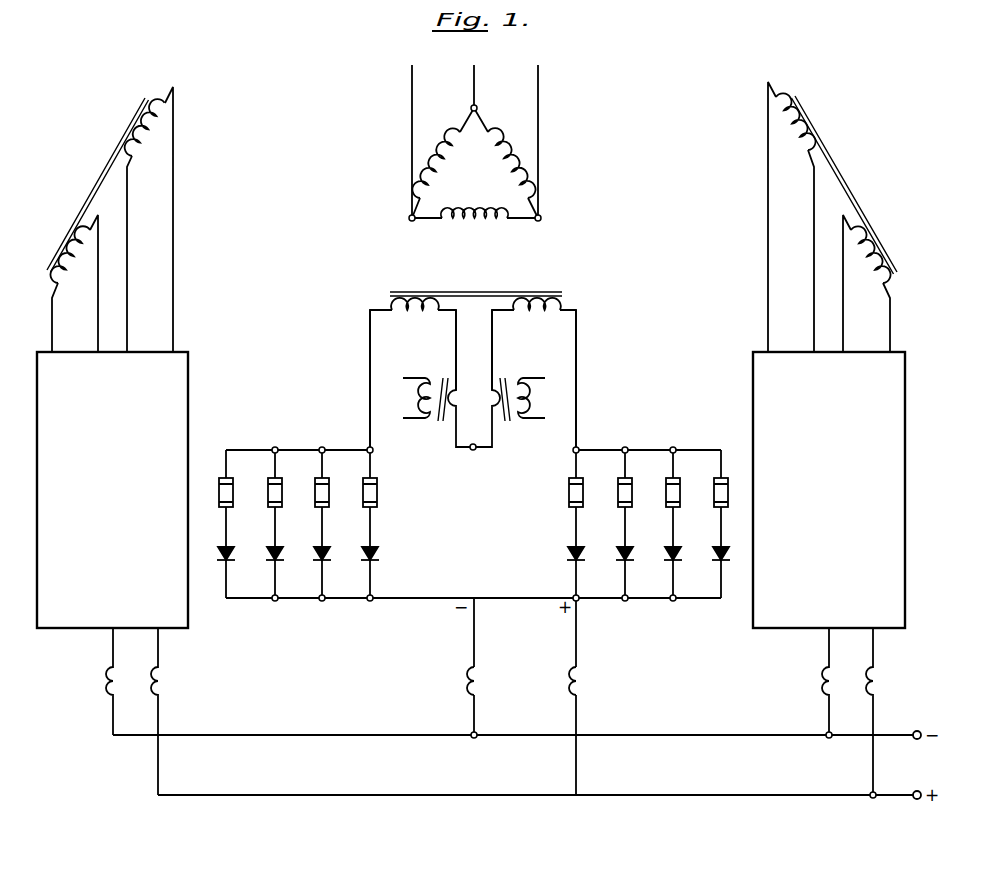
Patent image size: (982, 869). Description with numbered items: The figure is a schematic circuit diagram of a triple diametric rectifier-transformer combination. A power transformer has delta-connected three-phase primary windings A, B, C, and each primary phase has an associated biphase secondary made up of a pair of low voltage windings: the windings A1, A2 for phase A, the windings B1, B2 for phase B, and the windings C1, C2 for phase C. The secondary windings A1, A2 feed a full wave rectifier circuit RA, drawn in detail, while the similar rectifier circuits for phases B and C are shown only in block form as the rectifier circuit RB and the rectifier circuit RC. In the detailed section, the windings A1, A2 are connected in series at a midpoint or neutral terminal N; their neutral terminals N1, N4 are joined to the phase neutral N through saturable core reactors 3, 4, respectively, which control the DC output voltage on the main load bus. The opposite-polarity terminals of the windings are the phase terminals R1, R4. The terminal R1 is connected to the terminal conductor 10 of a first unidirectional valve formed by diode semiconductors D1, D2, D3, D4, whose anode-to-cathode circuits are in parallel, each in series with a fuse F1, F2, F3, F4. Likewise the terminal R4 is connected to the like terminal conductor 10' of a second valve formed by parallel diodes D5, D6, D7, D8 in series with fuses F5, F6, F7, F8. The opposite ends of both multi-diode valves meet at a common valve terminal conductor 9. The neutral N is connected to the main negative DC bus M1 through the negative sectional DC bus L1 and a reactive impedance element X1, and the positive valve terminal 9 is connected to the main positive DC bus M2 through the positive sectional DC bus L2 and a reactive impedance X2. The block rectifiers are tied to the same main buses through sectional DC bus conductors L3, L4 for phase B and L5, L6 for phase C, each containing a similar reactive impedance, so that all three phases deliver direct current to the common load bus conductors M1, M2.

The primary phase winding A is at (471, 231).
The primary phase winding B is at (438, 156).
The primary phase winding C is at (505, 156).
The low voltage secondary winding A1 is at (420, 302).
The low voltage secondary winding A2 is at (538, 302).
The secondary winding phase terminal R1 is at (355, 380).
The neutral terminal N1 is at (443, 350).
The neutral terminal N4 is at (507, 350).
The secondary winding phase terminal R4 is at (592, 380).
The saturable core reactor 3 is at (402, 398).
The saturable core reactor 4 is at (545, 398).
The neutral terminal N is at (476, 451).
The full wave rectifier circuit RA is at (460, 518).
The terminal conductor 10 is at (298, 421).
The terminal conductor 10' is at (648, 421).
The common valve terminal conductor 9 is at (346, 601).
The fuse F1 is at (228, 497).
The fuse F2 is at (277, 497).
The fuse F3 is at (324, 497).
The fuse F4 is at (372, 497).
The fuse F5 is at (574, 494).
The fuse F6 is at (623, 494).
The fuse F7 is at (671, 494).
The fuse F8 is at (719, 494).
The diode semiconductor D1 is at (233, 556).
The diode semiconductor D2 is at (282, 556).
The diode semiconductor D3 is at (329, 556).
The diode semiconductor D4 is at (377, 556).
The semiconductor diode D5 is at (569, 556).
The semiconductor diode D6 is at (618, 556).
The semiconductor diode D7 is at (666, 556).
The semiconductor diode D8 is at (714, 556).
The negative sectional DC bus L1 is at (474, 641).
The positive sectional DC bus L2 is at (576, 633).
The sectional DC bus conductor L3 is at (113, 651).
The sectional DC bus conductor L4 is at (158, 648).
The sectional DC bus conductor L5 is at (829, 652).
The sectional DC bus conductor L6 is at (873, 648).
The reactive impedance element X1 is at (467, 688).
The reactive impedance X2 is at (583, 688).
The main negative DC bus M1 is at (645, 736).
The main positive DC bus M2 is at (642, 796).
The full wave rectifier circuit RB is at (112, 490).
The full wave rectifier circuit RC is at (829, 490).
The low voltage secondary winding B1 is at (72, 283).
The low voltage secondary winding B2 is at (147, 219).
The low voltage secondary winding C1 is at (793, 217).
The low voltage secondary winding C2 is at (868, 283).